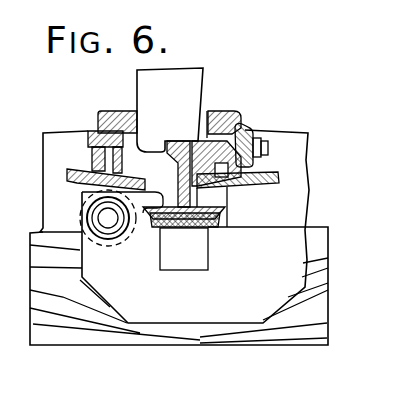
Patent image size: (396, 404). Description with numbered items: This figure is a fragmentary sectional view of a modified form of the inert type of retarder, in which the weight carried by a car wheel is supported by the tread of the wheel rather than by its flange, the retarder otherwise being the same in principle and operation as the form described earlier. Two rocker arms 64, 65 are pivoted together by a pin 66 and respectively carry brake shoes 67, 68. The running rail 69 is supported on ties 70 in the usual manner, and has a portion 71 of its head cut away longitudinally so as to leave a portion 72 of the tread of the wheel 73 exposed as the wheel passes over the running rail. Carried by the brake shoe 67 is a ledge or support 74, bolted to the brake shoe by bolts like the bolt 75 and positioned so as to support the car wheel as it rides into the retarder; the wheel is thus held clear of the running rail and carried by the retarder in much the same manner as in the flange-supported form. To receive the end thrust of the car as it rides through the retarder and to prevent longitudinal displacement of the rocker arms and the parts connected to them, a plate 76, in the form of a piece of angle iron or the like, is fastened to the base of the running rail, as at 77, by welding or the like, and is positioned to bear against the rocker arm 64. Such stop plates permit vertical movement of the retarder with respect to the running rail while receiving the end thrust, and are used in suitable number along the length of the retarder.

The rocker arm 64 is at (297, 157).
The rocker arm 65 is at (80, 136).
The pin 66 is at (108, 218).
The brake shoe 67 is at (242, 125).
The brake shoe 68 is at (124, 112).
The running rail 69 is at (222, 203).
The ties 70 is at (308, 306).
The portion of rail head 71 is at (185, 140).
The portion of wheel tread 72 is at (208, 111).
The wheel 73 is at (143, 80).
The ledge or support 74 is at (278, 173).
The bolt 75 is at (268, 142).
The plate 76 is at (197, 252).
The fastening (weld) to rail base 77 is at (220, 223).